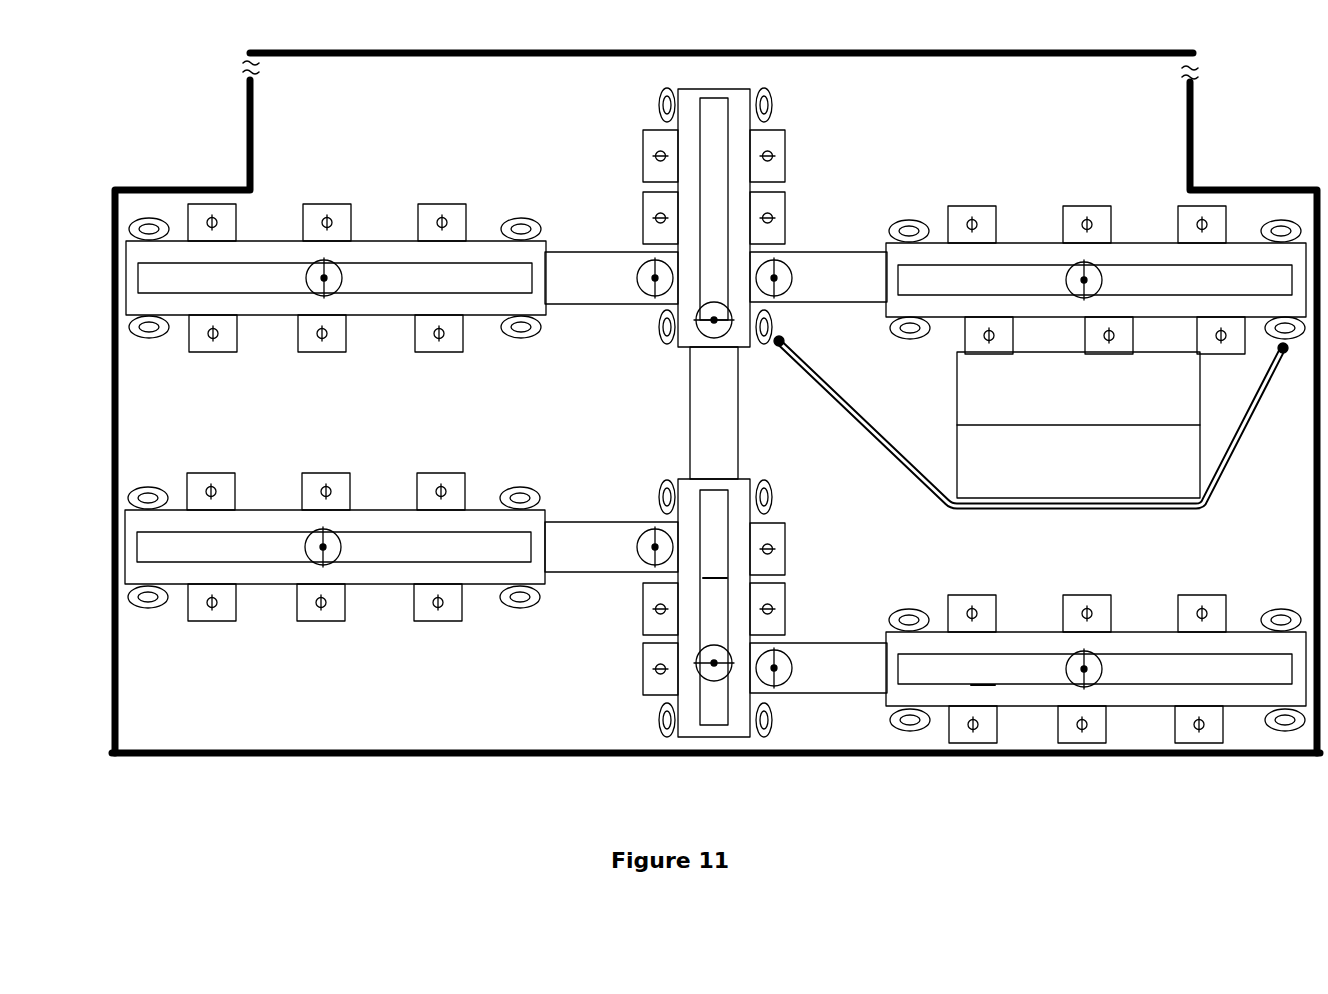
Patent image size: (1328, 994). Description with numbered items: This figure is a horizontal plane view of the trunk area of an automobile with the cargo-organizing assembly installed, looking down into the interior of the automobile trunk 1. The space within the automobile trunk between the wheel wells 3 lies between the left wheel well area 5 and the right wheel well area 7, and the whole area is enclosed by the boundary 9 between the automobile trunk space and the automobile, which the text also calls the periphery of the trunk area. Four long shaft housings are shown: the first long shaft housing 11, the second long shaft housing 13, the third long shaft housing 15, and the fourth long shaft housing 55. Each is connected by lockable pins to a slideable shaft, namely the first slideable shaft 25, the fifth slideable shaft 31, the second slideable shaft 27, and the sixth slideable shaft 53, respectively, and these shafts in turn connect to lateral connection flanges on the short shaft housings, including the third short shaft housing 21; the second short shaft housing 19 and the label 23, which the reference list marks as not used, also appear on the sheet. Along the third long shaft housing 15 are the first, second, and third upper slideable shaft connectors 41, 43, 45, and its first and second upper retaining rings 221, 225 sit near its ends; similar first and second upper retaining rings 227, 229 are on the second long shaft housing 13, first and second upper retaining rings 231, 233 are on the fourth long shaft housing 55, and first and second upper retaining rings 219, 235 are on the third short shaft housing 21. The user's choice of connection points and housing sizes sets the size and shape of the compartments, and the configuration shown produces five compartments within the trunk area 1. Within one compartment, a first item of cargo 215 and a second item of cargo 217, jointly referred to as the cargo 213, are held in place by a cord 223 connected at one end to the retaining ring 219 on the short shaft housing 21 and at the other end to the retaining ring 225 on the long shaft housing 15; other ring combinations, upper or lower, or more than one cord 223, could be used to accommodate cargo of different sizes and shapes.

The interior of automobile trunk 1 is at (578, 146).
The space within automobile trunk between wheel wells 3 is at (472, 133).
The left wheel well area 5 is at (170, 133).
The right wheel well area 7 is at (1253, 127).
The boundary between automobile trunk space and automobile 9 is at (1018, 758).
The first long shaft housing 11 is at (255, 510).
The second long shaft housing 13 is at (342, 291).
The third long shaft housing 15 is at (1072, 272).
The second short shaft housing 19 is at (1020, 35).
The third short shaft housing 21 is at (687, 203).
The rear area 23 is at (743, 809).
The first slideable shaft 25 is at (565, 522).
The second slideable shaft 27 is at (806, 252).
The fifth slideable shaft 31 is at (565, 252).
The first upper slideable shaft connector on third long shaft housing 41 is at (962, 330).
The second upper slideable shaft connector on third long shaft housing 43 is at (1085, 333).
The third upper slideable shaft connector on third long shaft housing 45 is at (1197, 333).
The sixth slideable shaft 53 is at (806, 643).
The fourth long shaft housing 55 is at (1096, 654).
The cargo 213 is at (1038, 425).
The first item of cargo 215 is at (1072, 402).
The second item of cargo 217 is at (1072, 477).
The first upper retaining ring on third short shaft housing 219 is at (782, 326).
The first upper retaining ring on third long shaft housing 221 is at (902, 334).
The cord 223 is at (869, 425).
The second upper retaining ring on third long shaft housing 225 is at (1288, 342).
The first upper retaining ring on second long shaft housing 227 is at (147, 338).
The second upper retaining ring on second long shaft housing 229 is at (522, 338).
The first upper retaining ring on fourth long shaft housing 231 is at (906, 612).
The second upper retaining ring on fourth long shaft housing 233 is at (1283, 612).
The second upper retaining ring on third short shaft housing 235 is at (659, 328).